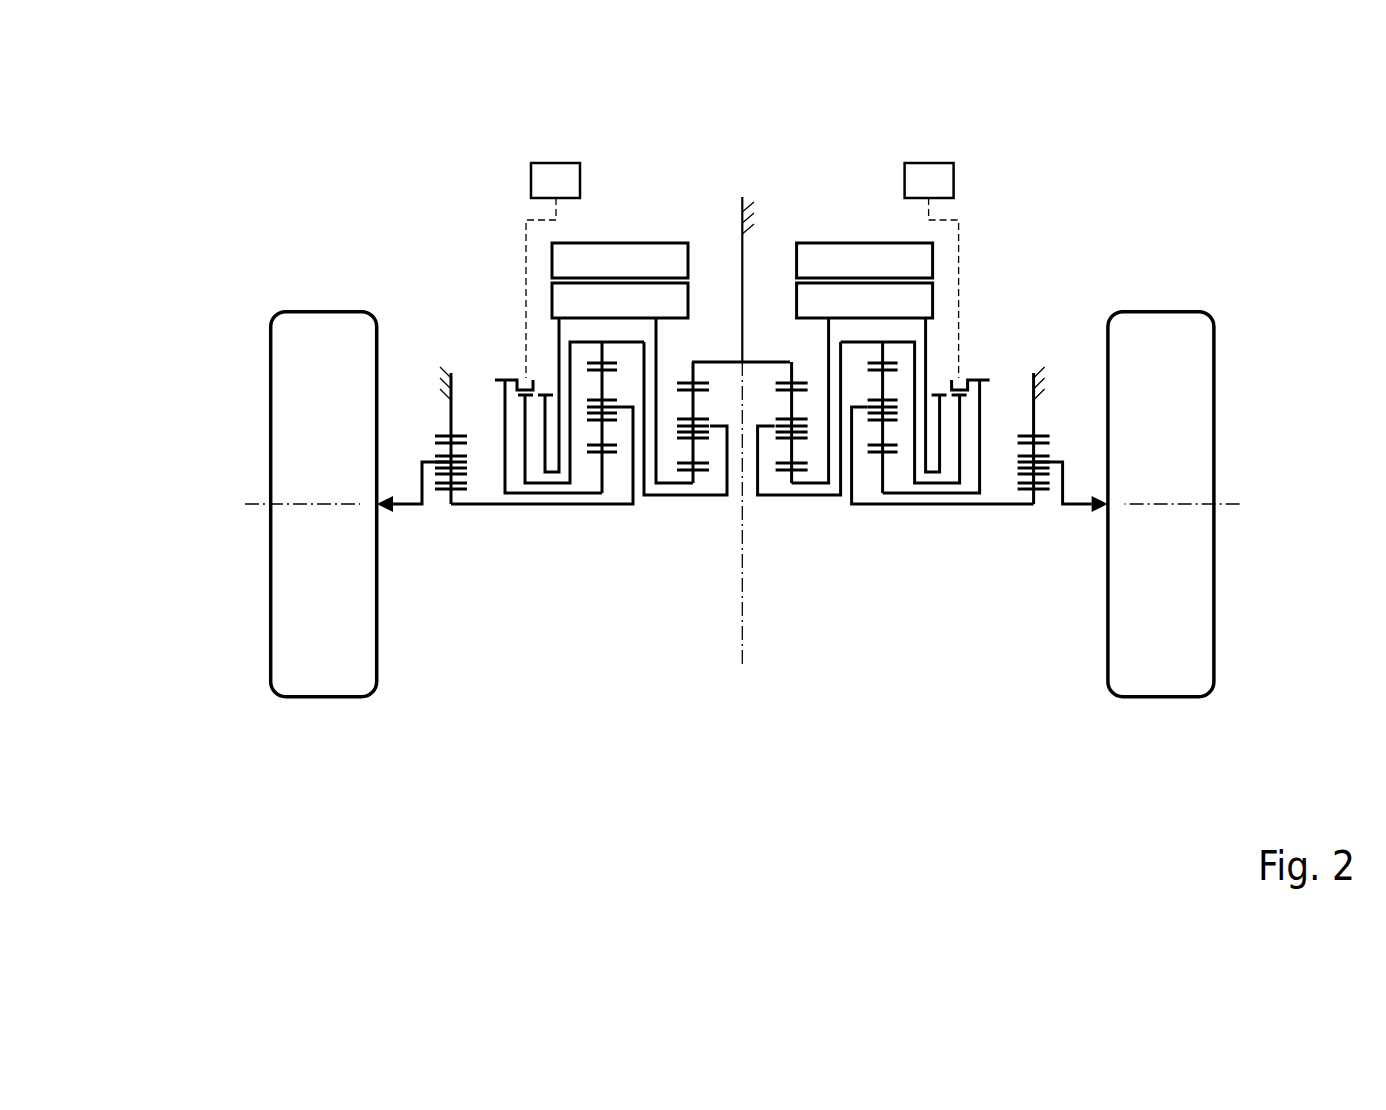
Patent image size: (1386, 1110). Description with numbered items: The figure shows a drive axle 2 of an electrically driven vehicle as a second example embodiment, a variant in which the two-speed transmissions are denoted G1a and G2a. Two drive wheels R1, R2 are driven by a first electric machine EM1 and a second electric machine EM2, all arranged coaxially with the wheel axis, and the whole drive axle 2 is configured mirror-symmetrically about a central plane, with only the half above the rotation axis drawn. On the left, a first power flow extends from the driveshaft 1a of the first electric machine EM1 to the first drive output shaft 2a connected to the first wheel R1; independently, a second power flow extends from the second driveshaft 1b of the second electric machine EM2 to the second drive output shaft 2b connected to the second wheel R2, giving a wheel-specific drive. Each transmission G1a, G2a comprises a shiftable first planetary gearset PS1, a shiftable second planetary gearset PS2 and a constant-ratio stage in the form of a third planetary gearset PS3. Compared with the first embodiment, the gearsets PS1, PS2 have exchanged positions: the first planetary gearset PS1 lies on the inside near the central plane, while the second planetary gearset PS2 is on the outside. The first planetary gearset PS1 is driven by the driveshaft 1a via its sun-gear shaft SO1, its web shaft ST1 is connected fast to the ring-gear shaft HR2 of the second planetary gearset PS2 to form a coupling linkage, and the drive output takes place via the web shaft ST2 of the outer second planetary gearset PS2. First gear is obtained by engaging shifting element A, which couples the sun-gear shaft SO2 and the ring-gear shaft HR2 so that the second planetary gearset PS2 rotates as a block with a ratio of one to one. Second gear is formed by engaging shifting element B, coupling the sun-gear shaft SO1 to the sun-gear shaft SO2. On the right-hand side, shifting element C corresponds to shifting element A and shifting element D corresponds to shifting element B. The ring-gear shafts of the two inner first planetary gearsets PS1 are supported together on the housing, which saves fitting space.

The drive axle 2 is at (1078, 227).
The driveshaft 1a is at (657, 355).
The second driveshaft 1b is at (827, 355).
The first electric machine EM1 is at (605, 238).
The second electric machine EM2 is at (875, 238).
The first drive output shaft 2a is at (408, 500).
The second drive output shaft 2b is at (1077, 500).
The first drive wheel R1 is at (317, 565).
The second drive wheel R2 is at (1168, 565).
The first planetary gearset PS1 is at (693, 530).
The second planetary gearset PS2 is at (602, 530).
The third planetary gearset PS3 is at (451, 530).
The sun-gear shaft SO1 is at (722, 640).
The web shaft ST1 is at (742, 580).
The ring-gear shaft HR2 is at (728, 580).
The sun-gear shaft SO2 is at (670, 599).
The web shaft ST2 is at (742, 612).
The two-speed transmission G1a is at (492, 680).
The two-speed transmission G2a is at (903, 553).
The shifting element A is at (514, 369).
The shifting element B is at (535, 371).
The shifting element C is at (971, 369).
The shifting element D is at (949, 371).